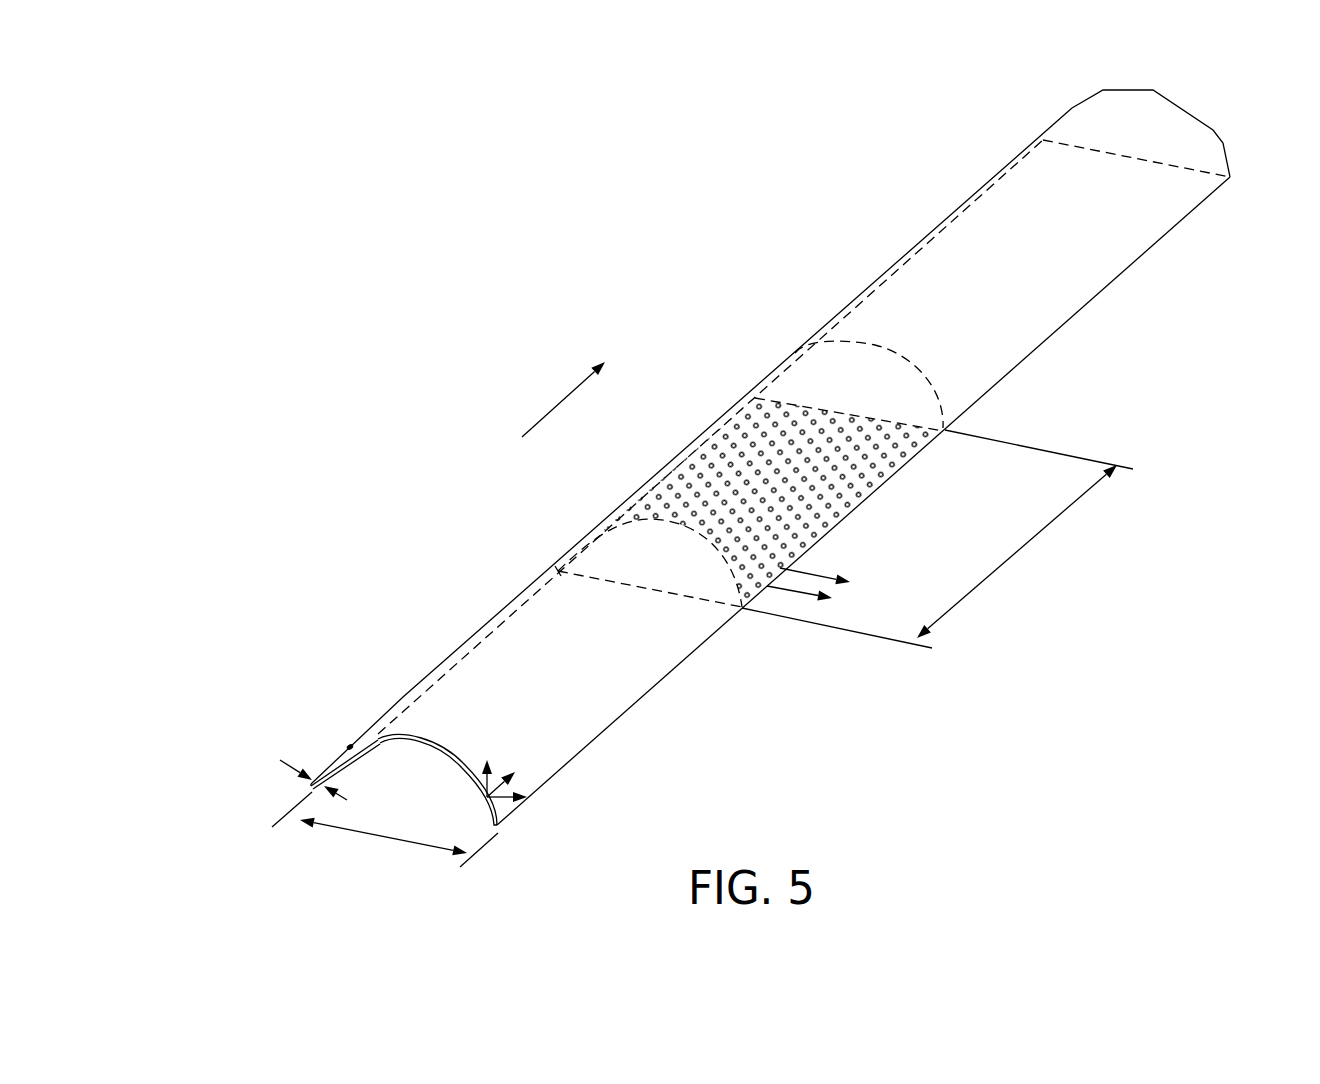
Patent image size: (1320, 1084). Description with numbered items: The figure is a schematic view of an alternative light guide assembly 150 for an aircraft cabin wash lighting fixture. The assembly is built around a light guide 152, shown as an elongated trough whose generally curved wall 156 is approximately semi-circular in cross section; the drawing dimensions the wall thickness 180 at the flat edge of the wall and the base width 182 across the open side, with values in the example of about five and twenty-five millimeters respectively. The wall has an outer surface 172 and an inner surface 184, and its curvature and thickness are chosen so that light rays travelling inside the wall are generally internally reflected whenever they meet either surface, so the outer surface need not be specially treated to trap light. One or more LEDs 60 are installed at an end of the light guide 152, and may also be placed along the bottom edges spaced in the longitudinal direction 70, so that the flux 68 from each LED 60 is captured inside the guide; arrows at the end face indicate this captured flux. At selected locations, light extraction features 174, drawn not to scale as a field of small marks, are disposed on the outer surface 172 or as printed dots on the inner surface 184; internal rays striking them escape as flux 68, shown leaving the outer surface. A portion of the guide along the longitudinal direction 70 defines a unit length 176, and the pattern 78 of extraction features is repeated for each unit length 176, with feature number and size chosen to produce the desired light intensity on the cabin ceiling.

The light guide assembly 150 is at (262, 560).
The light guide 152 is at (634, 462).
The curved wall 156 is at (516, 584).
The LED 60 is at (440, 750).
The flux 68 is at (828, 580).
The longitudinal direction 70 is at (563, 398).
The pattern 78 is at (703, 418).
The outer surface 172 is at (1063, 247).
The light extraction features 174 is at (883, 472).
The unit length 176 is at (1030, 540).
The wall thickness 180 is at (280, 760).
The base width 182 is at (368, 845).
The inner surface 184 is at (352, 743).